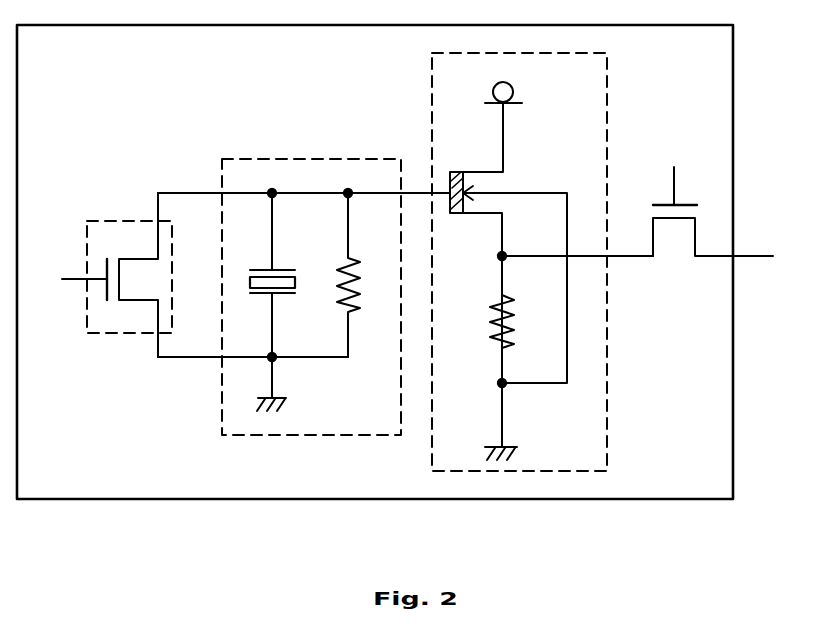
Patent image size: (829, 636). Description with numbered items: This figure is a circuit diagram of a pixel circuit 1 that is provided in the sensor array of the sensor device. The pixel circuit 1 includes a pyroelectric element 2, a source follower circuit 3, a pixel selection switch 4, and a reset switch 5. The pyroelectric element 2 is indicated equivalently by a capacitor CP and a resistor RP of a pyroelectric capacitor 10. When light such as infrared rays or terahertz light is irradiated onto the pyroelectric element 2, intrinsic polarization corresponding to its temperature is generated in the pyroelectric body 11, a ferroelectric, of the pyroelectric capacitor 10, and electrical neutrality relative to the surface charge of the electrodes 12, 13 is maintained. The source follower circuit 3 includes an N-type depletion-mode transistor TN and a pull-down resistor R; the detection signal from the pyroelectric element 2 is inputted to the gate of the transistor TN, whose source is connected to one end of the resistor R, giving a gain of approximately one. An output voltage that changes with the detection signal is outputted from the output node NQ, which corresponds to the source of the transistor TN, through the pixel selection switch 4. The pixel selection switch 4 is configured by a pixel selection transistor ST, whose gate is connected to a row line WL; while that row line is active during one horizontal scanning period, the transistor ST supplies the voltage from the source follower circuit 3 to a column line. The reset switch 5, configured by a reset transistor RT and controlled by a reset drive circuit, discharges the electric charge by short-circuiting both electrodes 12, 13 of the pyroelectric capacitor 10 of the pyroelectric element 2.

The pixel circuit 1 is at (733, 51).
The pyroelectric element 2 is at (312, 159).
The source follower circuit 3 is at (607, 99).
The pixel selection switch 4 is at (702, 230).
The reset switch 5 is at (135, 221).
The pyroelectric capacitor 10 is at (176, 354).
The pyroelectric body 11 is at (250, 278).
The electrode 12 is at (250, 270).
The electrode 13 is at (250, 293).